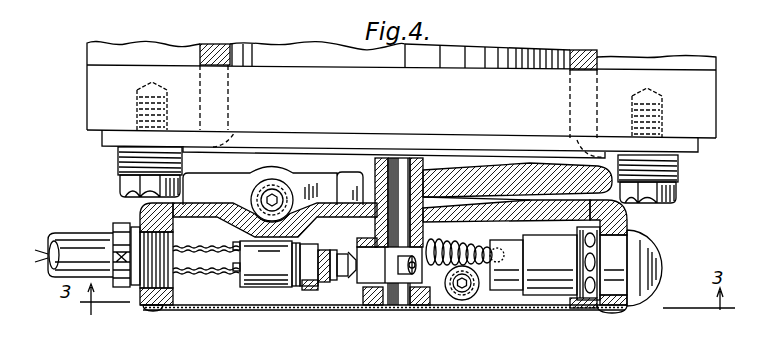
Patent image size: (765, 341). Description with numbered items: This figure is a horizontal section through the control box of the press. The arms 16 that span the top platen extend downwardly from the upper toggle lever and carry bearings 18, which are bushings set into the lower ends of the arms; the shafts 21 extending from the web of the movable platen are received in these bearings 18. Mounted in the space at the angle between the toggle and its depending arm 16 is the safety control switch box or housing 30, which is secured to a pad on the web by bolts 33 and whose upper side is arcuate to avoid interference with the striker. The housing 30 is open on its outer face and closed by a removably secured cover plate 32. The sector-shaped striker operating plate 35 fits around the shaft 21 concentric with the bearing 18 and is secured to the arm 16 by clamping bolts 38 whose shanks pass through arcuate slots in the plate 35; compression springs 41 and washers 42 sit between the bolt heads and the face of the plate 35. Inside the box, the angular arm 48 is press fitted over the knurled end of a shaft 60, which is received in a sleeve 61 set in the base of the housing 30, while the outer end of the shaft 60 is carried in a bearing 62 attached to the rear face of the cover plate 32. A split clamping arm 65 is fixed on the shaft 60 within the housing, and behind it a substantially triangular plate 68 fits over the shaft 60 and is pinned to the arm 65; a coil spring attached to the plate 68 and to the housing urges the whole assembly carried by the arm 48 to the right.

The arm 16 is at (712, 99).
The bearing 18 is at (587, 54).
The shaft 21 is at (510, 53).
The safety control switch box or housing 30 is at (627, 221).
The cover plate 32 is at (588, 306).
The bolt 33 is at (276, 178).
The striker operating plate 35 is at (698, 148).
The clamping bolt 38 is at (678, 198).
The compression spring 41 is at (117, 164).
The washer 42 is at (680, 155).
The angular arm 48 is at (490, 170).
The shaft 60 is at (421, 160).
The sleeve 61 is at (433, 165).
The bearing 62 is at (366, 306).
The split clamping arm 65 is at (362, 279).
The triangular plate 68 is at (360, 242).